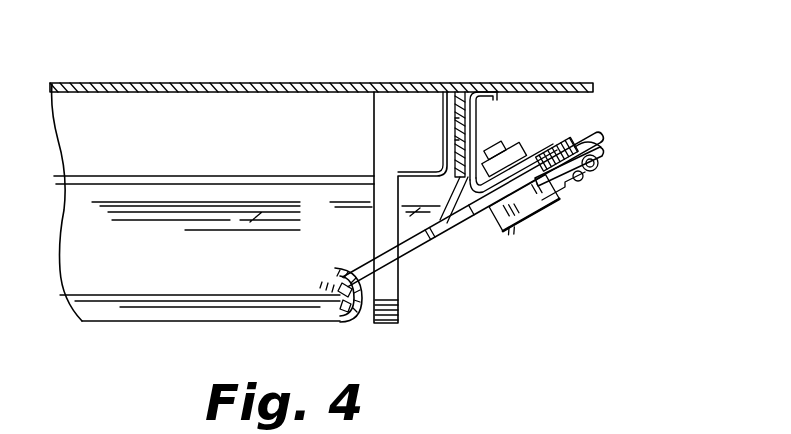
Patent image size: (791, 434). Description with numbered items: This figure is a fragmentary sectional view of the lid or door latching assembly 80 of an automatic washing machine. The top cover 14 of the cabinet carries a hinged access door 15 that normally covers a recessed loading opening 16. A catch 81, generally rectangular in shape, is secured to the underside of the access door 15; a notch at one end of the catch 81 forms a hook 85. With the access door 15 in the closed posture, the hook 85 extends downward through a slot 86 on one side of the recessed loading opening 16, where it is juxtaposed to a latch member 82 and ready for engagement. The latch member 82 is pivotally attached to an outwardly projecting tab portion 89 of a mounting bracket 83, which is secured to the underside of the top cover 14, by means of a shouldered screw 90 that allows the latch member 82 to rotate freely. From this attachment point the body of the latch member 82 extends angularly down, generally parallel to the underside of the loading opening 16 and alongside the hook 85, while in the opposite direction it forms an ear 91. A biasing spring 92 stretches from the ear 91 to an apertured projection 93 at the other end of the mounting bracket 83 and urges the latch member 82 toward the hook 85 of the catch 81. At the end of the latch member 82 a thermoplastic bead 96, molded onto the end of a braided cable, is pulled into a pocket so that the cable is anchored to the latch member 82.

The top cover 14 is at (557, 83).
The access door 15 is at (232, 82).
The recessed loading opening 16 is at (158, 279).
The door latching assembly 80 is at (584, 190).
The catch 81 is at (376, 124).
The latch member 82 is at (465, 236).
The mounting bracket 83 is at (496, 131).
The hook 85 is at (400, 314).
The slot 86 is at (356, 270).
The tab portion 89 is at (578, 140).
The shouldered screw 90 is at (545, 143).
The ear 91 is at (598, 158).
The biasing spring 92 is at (601, 147).
The apertured projection 93 is at (447, 190).
The thermoplastic beads 96 is at (352, 304).